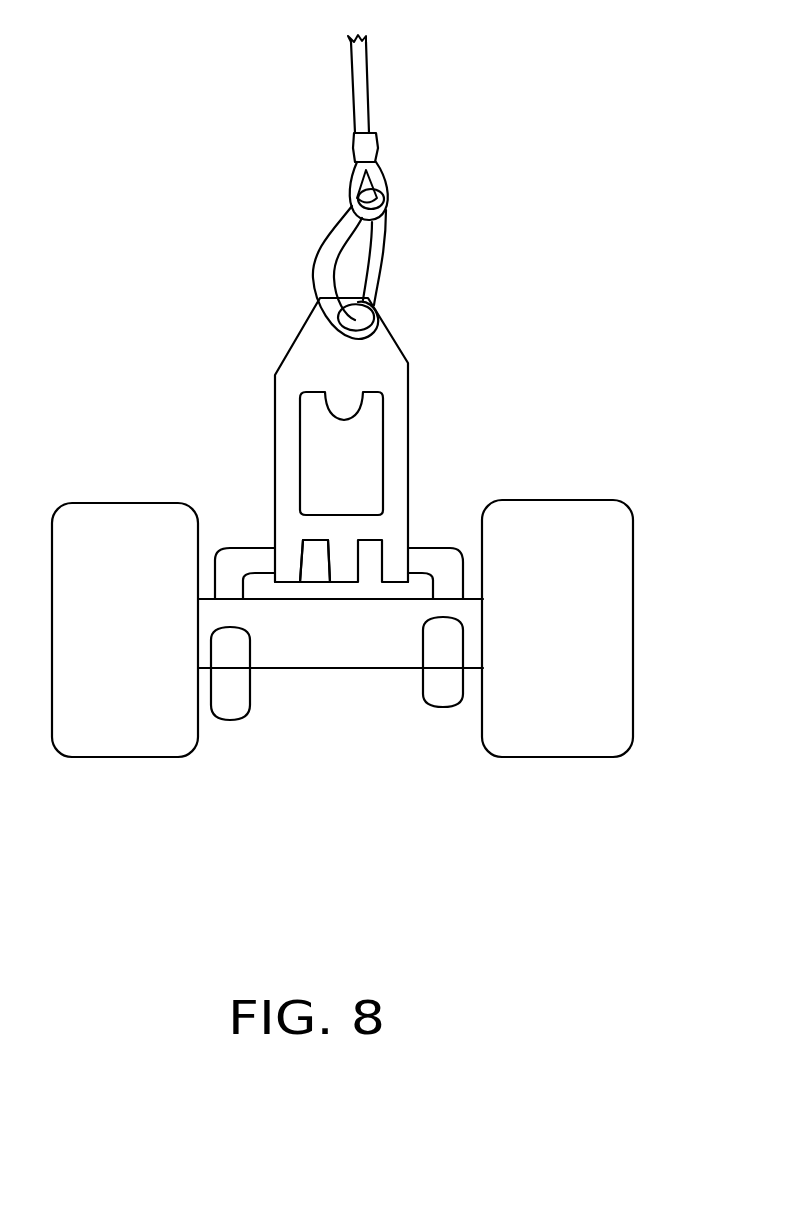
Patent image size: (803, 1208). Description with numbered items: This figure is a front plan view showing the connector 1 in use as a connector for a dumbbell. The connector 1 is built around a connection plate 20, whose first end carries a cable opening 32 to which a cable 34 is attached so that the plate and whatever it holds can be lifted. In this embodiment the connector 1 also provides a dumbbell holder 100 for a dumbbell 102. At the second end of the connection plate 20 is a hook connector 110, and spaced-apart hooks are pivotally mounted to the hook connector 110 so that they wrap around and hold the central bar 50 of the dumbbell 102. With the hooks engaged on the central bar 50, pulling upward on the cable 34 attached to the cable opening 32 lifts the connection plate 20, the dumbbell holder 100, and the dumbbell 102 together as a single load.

The connector 1 is at (405, 358).
The connection plate 20 is at (409, 402).
The cable opening 32 is at (380, 322).
The cable 34 is at (362, 78).
The central bar 50 is at (355, 655).
The dumbbell holder 100 is at (436, 545).
The dumbbell 102 is at (394, 622).
The hook connector 110 is at (287, 557).